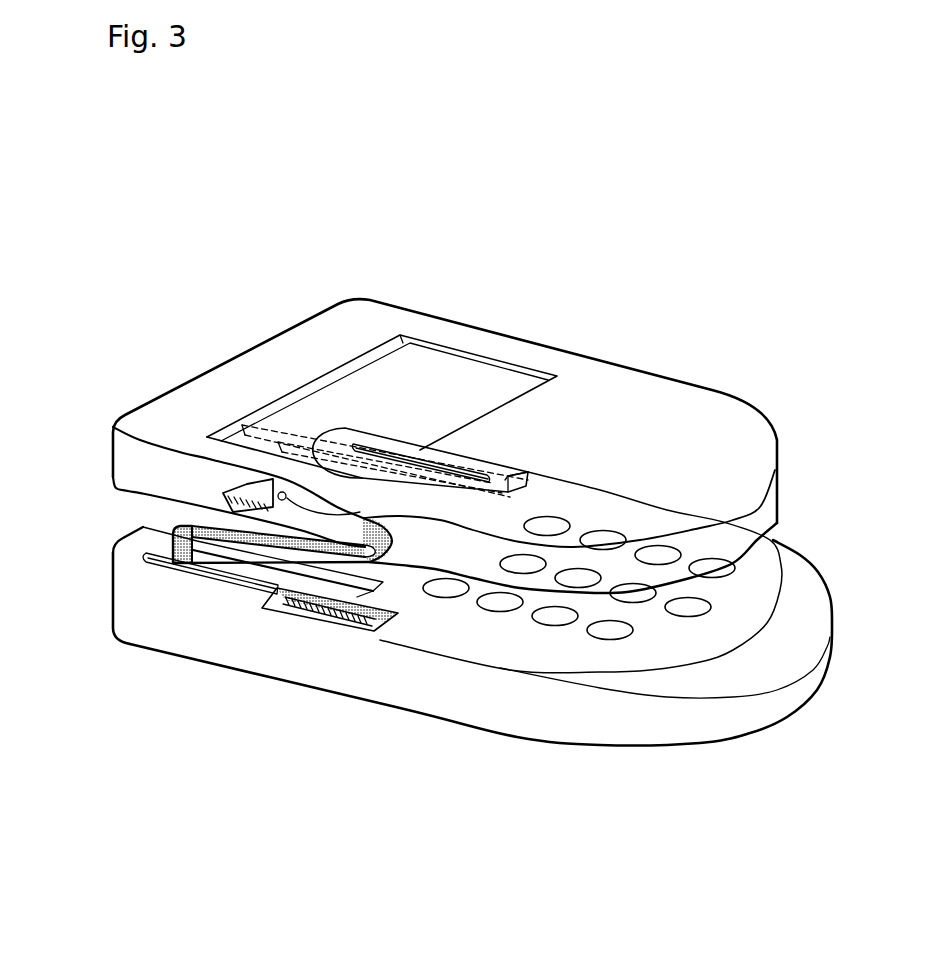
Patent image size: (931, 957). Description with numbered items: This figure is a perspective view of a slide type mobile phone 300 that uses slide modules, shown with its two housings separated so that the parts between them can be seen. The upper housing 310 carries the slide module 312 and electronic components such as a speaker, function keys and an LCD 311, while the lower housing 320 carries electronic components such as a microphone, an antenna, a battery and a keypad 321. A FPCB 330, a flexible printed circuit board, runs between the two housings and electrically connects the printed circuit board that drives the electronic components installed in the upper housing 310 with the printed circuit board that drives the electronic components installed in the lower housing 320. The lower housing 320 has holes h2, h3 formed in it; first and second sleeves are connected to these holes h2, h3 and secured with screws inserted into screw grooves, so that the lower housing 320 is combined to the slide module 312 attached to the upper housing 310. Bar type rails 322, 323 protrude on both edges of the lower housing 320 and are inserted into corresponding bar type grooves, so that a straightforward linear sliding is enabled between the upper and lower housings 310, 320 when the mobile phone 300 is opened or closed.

The mobile phone 300 is at (297, 307).
The upper housing 310 is at (712, 388).
The LCD 311 is at (408, 350).
The slide module 312 is at (512, 482).
The lower housing 320 is at (343, 678).
The keypad 321 is at (556, 618).
The bar type rail 322 is at (487, 472).
The bar type rail 323 is at (140, 564).
The FPCB 330 is at (173, 532).
The hole h2 is at (283, 487).
The hole h3 is at (213, 506).